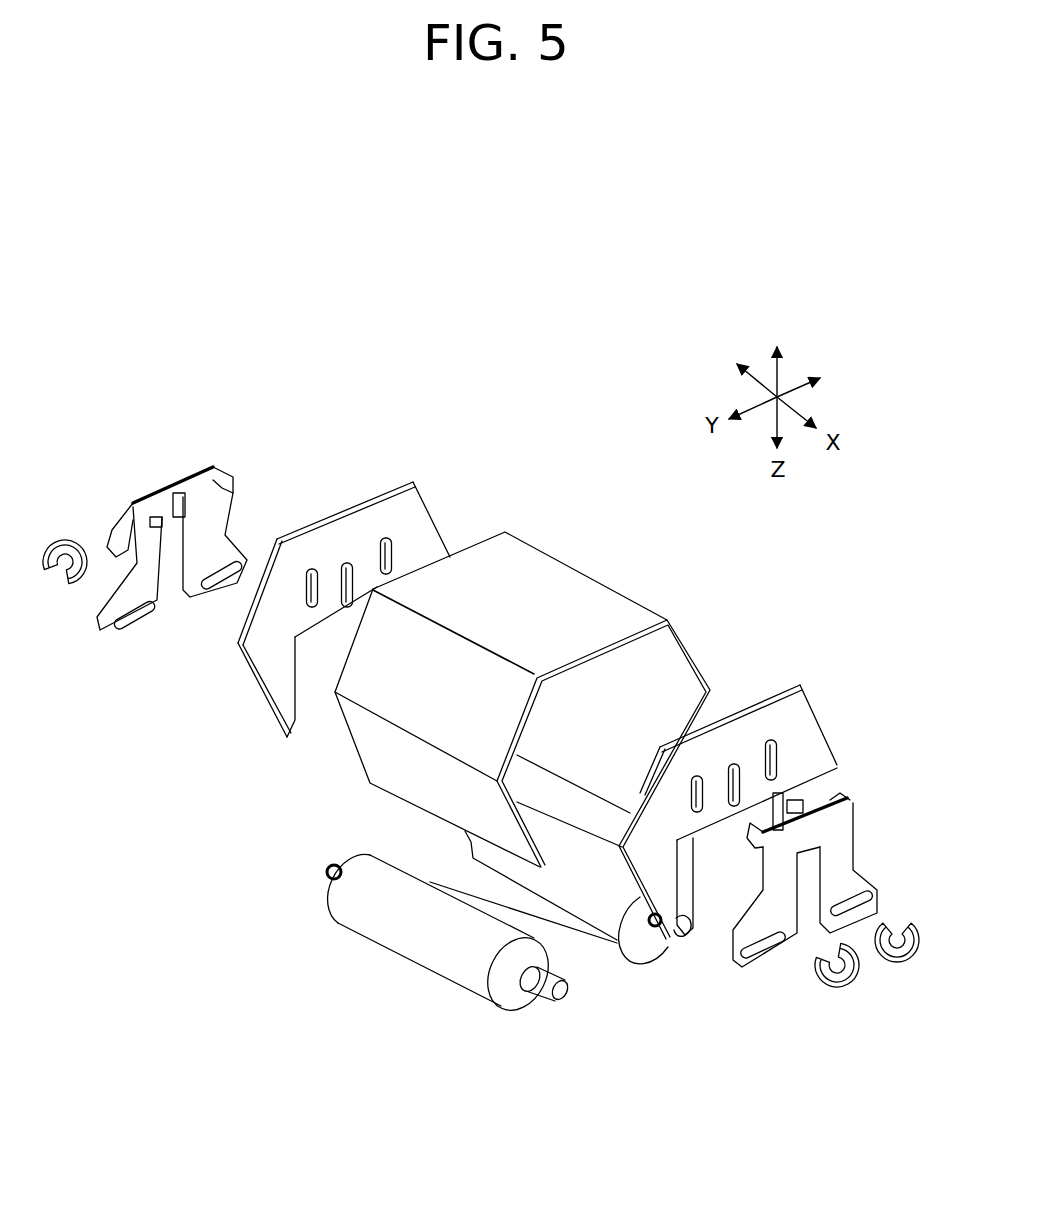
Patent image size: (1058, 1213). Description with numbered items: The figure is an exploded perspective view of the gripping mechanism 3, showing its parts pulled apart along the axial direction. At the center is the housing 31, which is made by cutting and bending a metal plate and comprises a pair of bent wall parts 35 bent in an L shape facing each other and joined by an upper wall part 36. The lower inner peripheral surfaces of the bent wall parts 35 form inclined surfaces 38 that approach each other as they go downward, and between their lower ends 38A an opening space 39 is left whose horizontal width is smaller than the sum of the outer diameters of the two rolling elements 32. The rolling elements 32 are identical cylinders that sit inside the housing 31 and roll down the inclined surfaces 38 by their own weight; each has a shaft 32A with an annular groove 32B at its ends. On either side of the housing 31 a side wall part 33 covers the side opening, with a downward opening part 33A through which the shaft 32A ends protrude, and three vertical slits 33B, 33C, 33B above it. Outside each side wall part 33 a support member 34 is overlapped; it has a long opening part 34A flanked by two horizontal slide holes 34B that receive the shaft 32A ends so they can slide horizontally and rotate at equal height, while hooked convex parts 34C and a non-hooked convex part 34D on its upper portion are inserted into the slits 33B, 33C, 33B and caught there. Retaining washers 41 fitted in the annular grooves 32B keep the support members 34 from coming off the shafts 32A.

The gripping mechanism 3 is at (541, 445).
The housing 31 is at (516, 722).
The rolling element 32 is at (462, 963).
The shaft 32A is at (327, 868).
The annular groove 32B is at (335, 887).
The side wall part 33 is at (552, 712).
The opening part 33A is at (295, 700).
The vertical slit 33B is at (311, 570).
The vertical slit 33C is at (347, 563).
The support member 34 is at (509, 712).
The long opening part 34A is at (167, 587).
The horizontal slide hole 34B is at (123, 637).
The hooked convex part 34C is at (148, 518).
The non-hooked convex part 34D is at (179, 493).
The bent wall part 35 is at (373, 783).
The upper wall part 36 is at (507, 617).
The inclined surface 38 is at (525, 830).
The lower end 38A is at (423, 813).
The opening space 39 is at (588, 803).
The retaining washer 41 is at (128, 517).